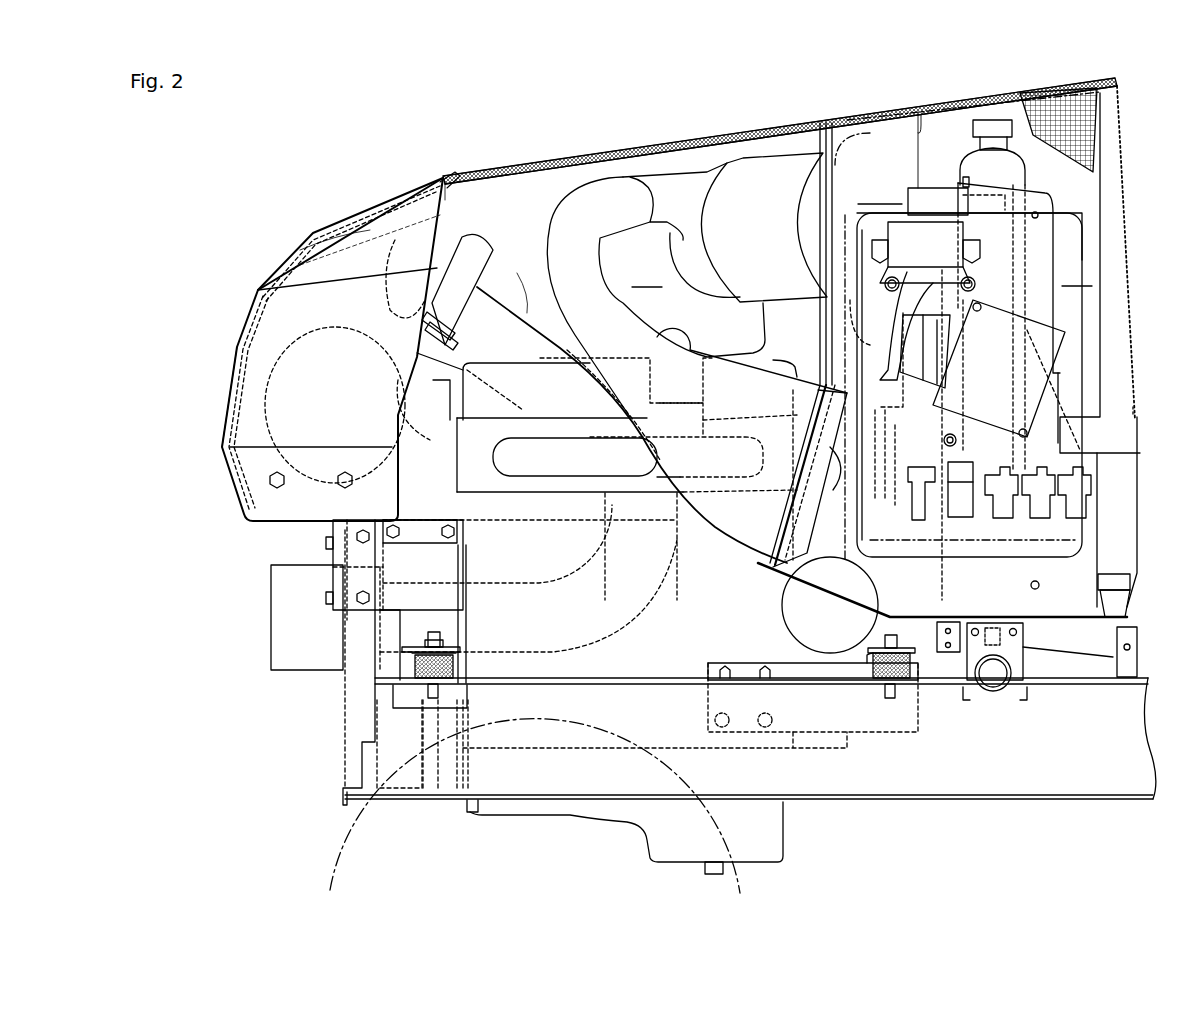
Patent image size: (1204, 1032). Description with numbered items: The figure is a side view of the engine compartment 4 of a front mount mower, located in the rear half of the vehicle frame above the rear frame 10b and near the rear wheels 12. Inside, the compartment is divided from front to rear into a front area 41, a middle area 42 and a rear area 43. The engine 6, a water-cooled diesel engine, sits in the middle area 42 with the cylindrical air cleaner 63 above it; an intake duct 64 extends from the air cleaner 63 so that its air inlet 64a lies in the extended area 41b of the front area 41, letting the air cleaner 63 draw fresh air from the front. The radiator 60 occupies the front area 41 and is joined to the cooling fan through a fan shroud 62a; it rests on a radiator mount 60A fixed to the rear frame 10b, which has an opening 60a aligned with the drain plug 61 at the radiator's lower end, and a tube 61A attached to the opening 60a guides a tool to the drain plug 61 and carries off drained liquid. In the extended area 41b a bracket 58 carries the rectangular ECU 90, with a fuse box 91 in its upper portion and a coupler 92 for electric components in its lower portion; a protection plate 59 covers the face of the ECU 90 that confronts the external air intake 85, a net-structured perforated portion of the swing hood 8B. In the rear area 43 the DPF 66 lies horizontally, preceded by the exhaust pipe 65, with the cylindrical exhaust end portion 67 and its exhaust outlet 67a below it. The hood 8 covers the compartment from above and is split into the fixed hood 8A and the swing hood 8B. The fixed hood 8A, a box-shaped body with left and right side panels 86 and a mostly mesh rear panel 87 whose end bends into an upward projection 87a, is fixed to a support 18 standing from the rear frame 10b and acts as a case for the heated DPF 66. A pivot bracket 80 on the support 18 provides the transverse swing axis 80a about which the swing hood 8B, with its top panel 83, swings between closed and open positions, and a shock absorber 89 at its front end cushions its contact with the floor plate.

The engine compartment 4 is at (532, 190).
The engine 6 is at (520, 350).
The hood 8 is at (468, 140).
The fixed hood 8A is at (250, 300).
The swing hood 8B is at (648, 140).
The rear frame 10b is at (898, 798).
The rear wheels 12 is at (345, 843).
The support 18 is at (347, 720).
The front area 41 is at (968, 387).
The extended area 41b is at (969, 219).
The middle area 42 is at (693, 320).
The rear area 43 is at (330, 268).
The bracket 58 is at (1030, 545).
The protection plate 59 is at (1032, 345).
The radiator 60 is at (1013, 158).
The radiator mount 60A is at (1025, 662).
The opening 60a is at (993, 690).
The drain plug 61 is at (1025, 633).
The tube 61A is at (975, 660).
The fan shroud 62a is at (940, 200).
The air cleaner 63 is at (745, 272).
The intake duct 64 is at (722, 510).
The air inlet 64a is at (770, 458).
The exhaust pipe 65 is at (478, 235).
The DPF 66 is at (232, 418).
The exhaust end portion 67 is at (527, 303).
The exhaust outlet 67a is at (271, 620).
The pivot bracket 80 is at (450, 505).
The swing axis 80a is at (505, 455).
The top panel 83 is at (578, 162).
The external air intake 85 is at (1110, 125).
The side panels 86 is at (350, 245).
The rear panel 87 is at (235, 352).
The upward projection 87a is at (448, 183).
The shock absorber 89 is at (1141, 603).
The ECU 90 is at (1060, 357).
The fuse box 91 is at (952, 232).
The coupler 92 is at (993, 490).